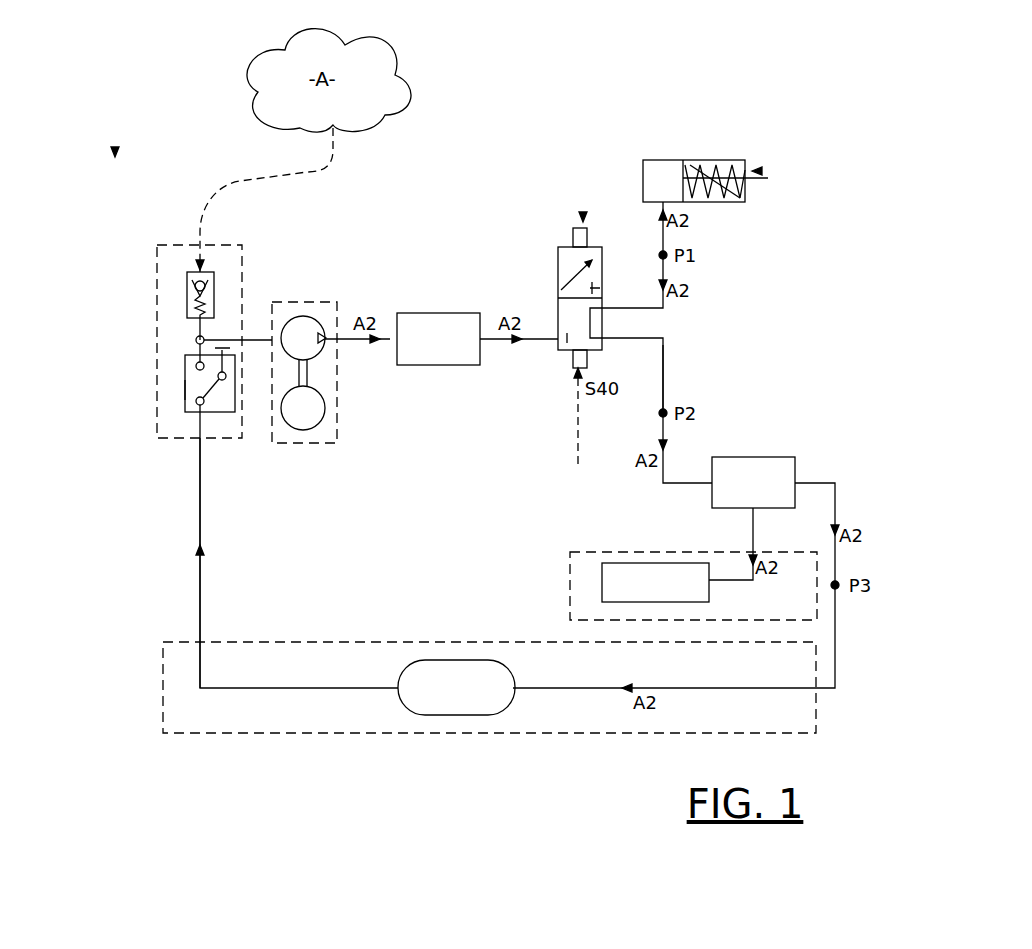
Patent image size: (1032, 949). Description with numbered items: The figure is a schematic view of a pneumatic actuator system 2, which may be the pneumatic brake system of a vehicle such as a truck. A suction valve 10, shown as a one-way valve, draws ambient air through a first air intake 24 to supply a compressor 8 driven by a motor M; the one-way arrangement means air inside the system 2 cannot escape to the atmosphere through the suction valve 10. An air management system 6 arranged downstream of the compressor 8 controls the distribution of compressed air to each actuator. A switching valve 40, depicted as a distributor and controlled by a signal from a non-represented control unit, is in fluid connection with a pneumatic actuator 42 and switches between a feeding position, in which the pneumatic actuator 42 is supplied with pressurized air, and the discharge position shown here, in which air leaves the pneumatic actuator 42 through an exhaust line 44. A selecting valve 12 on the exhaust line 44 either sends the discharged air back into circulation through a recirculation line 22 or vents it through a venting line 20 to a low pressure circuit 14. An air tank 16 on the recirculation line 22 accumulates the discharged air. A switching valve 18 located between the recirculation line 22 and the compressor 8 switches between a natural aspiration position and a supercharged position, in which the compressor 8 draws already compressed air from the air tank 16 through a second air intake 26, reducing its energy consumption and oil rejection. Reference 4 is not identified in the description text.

The pneumatic actuator system 2 is at (110, 152).
The pressure regulating device 4 is at (750, 82).
The air management system 6 is at (438, 339).
The compressor 8 is at (331, 372).
The suction valve 10 is at (170, 283).
The selecting valve 12 is at (674, 572).
The low pressure circuit 14 is at (655, 582).
The air tank 16 is at (489, 687).
The switching valve 18 is at (184, 393).
The venting line 20 is at (753, 527).
The recirculation line 22 is at (198, 514).
The first air intake 24 is at (192, 333).
The second air intake 26 is at (186, 350).
The switching valve 40 is at (585, 215).
The pneumatic actuator 42 is at (762, 169).
The exhaust line 44 is at (665, 363).